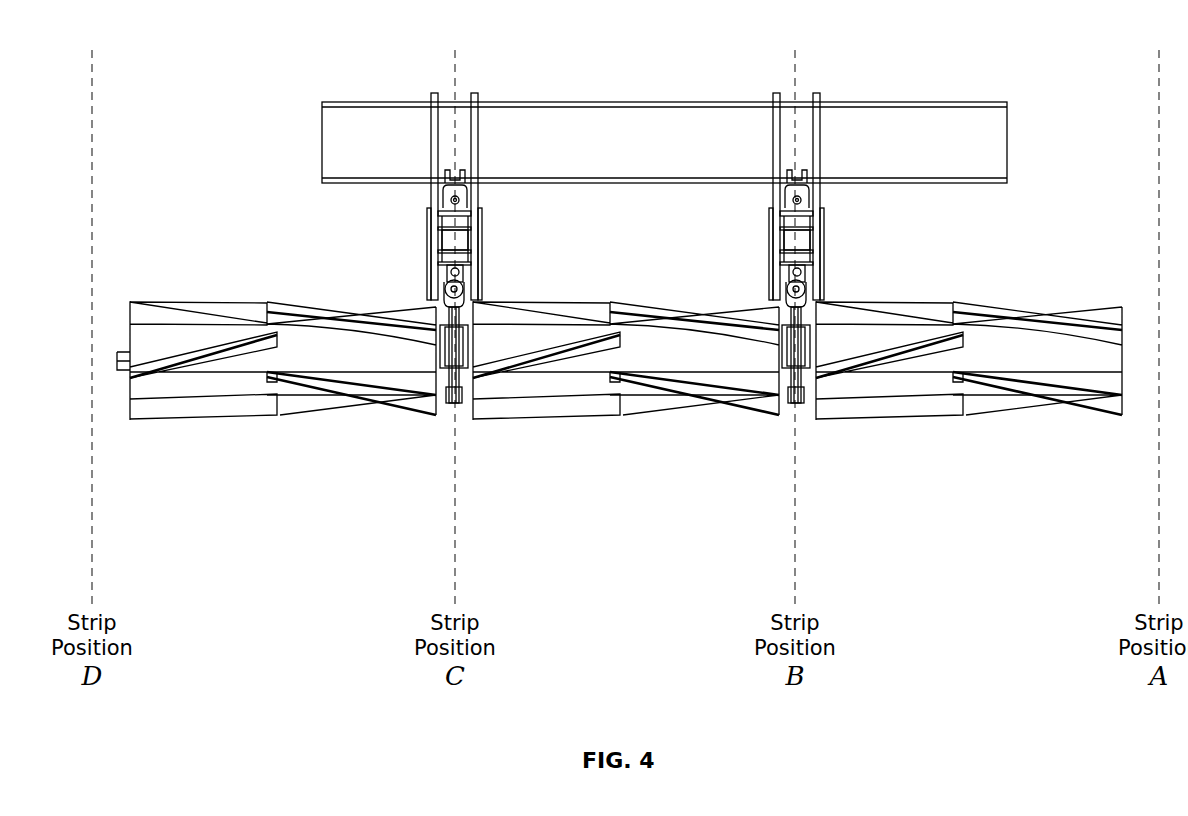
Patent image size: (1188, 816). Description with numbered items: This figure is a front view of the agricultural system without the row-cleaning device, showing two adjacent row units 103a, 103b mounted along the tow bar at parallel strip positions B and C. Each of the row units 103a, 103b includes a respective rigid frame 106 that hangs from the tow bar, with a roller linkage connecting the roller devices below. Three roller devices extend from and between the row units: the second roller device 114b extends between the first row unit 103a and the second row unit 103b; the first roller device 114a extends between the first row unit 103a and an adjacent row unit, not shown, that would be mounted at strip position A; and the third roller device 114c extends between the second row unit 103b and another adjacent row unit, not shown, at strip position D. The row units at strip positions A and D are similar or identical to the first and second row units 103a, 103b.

The rigid frame 106 is at (821, 99).
The first row unit 103a is at (819, 248).
The second row unit 103b is at (477, 248).
The first roller device 114a is at (1022, 372).
The second roller device 114b is at (712, 358).
The third roller device 114c is at (362, 365).